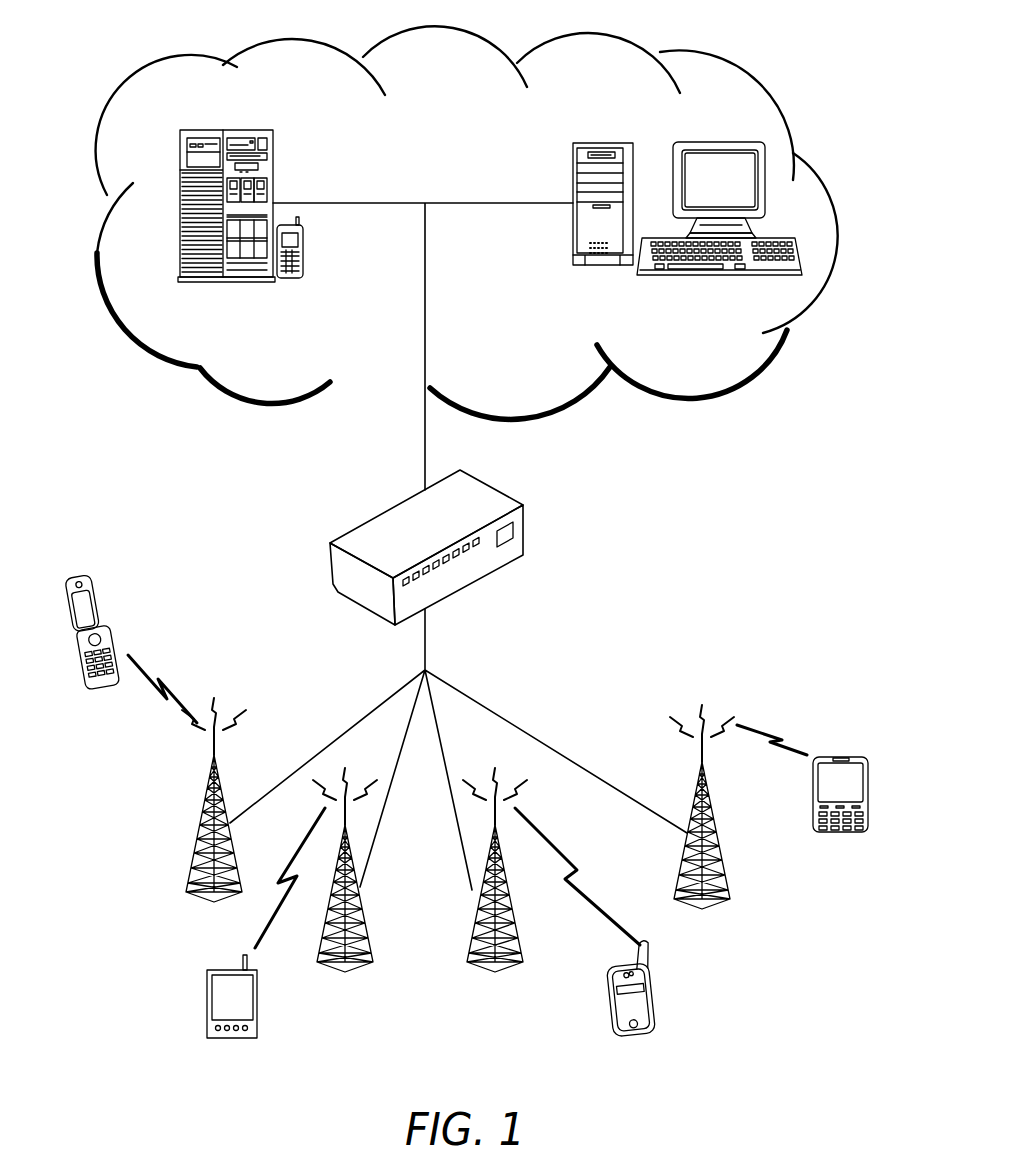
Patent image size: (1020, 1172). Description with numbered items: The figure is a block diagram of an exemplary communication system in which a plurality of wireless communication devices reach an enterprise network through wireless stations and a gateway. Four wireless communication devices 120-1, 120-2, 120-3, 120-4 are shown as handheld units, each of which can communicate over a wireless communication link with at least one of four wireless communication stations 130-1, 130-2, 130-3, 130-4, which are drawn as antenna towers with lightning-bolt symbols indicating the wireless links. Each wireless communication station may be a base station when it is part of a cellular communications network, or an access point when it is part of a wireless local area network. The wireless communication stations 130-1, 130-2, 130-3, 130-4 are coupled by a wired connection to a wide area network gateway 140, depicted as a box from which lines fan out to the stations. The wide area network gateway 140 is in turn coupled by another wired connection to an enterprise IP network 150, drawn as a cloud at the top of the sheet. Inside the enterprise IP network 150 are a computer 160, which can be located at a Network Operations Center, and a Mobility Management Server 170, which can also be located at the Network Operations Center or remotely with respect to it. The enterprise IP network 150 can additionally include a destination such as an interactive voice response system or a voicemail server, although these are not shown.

The enterprise IP network 150 is at (753, 67).
The Mobility Management Server 170 is at (260, 130).
The computer 160 is at (587, 142).
The wide area network gateway 140 is at (355, 528).
The wireless communication station 130-1 is at (197, 821).
The wireless communication station 130-2 is at (360, 910).
The wireless communication station 130-3 is at (515, 910).
The wireless communication station 130-4 is at (720, 845).
The wireless communication device 120-1 is at (107, 617).
The wireless communication device 120-2 is at (207, 1000).
The wireless communication device 120-3 is at (652, 1003).
The wireless communication device 120-4 is at (842, 755).